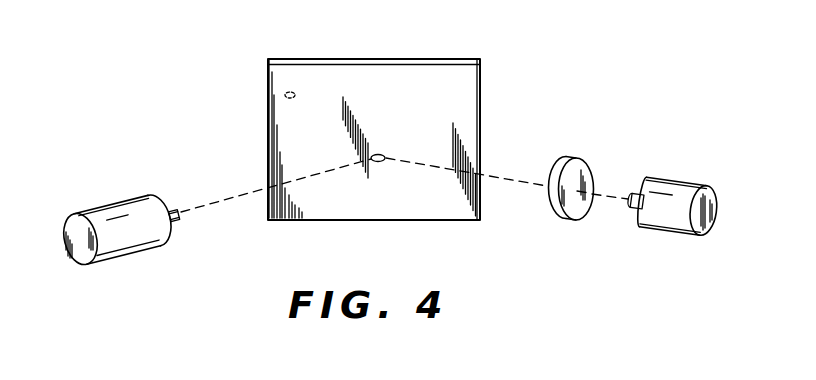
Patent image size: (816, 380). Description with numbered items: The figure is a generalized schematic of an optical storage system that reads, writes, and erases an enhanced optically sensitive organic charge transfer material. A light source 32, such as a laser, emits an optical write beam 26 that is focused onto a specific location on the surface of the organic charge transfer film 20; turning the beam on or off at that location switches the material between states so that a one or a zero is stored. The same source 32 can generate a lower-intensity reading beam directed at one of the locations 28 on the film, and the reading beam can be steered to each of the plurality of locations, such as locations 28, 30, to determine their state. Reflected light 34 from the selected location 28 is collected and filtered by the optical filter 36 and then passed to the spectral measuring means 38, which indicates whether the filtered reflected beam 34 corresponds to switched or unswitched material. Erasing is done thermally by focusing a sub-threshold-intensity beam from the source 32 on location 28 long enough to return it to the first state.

The organic charge transfer film 20 is at (375, 60).
The optical write beam 26 is at (232, 198).
The location 28 is at (383, 154).
The location 30 is at (293, 88).
The light source 32 is at (137, 200).
The reflected light 34 is at (488, 173).
The optical filter 36 is at (565, 158).
The spectral measuring means 38 is at (685, 177).